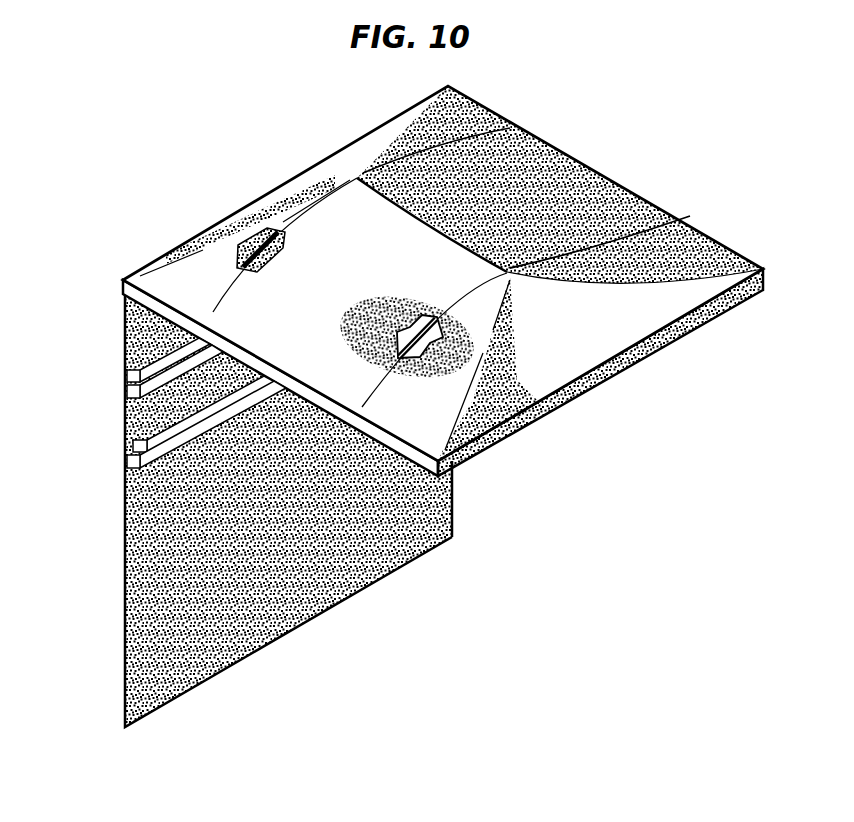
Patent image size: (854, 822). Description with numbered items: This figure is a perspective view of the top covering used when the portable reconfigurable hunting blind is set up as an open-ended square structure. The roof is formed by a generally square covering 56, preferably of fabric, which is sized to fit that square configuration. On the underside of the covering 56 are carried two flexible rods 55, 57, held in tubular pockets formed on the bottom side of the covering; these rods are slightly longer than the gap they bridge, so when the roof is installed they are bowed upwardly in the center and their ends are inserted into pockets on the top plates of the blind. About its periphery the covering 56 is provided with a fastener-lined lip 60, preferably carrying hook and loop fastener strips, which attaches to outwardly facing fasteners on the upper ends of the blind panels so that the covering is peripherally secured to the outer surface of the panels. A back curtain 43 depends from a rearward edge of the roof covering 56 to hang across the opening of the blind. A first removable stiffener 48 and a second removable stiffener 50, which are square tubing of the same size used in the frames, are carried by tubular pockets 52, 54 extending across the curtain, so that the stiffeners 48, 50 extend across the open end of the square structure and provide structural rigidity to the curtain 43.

The back curtain 43 is at (318, 575).
The first removable stiffener 48 is at (130, 384).
The second removable stiffener 50 is at (131, 470).
The tubular pocket 52 is at (153, 372).
The tubular pocket 54 is at (143, 441).
The rod 55 is at (279, 250).
The square covering 56 is at (612, 192).
The rod 57 is at (413, 328).
The lip 60 is at (645, 364).